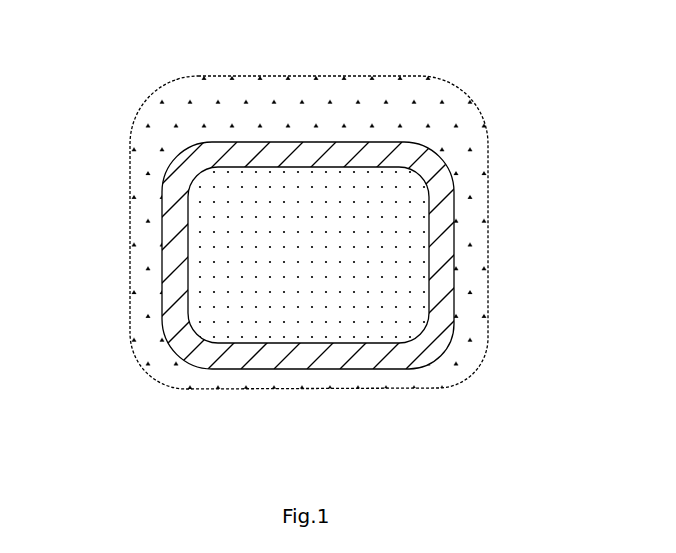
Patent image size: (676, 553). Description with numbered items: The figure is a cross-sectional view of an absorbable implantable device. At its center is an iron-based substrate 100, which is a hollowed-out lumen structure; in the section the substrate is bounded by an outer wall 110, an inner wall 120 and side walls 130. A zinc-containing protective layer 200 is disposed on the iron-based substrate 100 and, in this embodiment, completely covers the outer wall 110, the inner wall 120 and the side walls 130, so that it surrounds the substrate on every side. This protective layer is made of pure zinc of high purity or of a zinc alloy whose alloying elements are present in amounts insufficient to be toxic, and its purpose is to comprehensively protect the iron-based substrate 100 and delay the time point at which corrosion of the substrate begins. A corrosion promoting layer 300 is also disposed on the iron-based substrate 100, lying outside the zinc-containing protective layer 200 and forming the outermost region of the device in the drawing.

The iron-based substrate 100 is at (400, 283).
The outer wall 110 is at (313, 162).
The inner wall 120 is at (332, 345).
The side walls 130 is at (190, 203).
The zinc-containing protective layer 200 is at (333, 248).
The corrosion promoting layer 300 is at (167, 358).